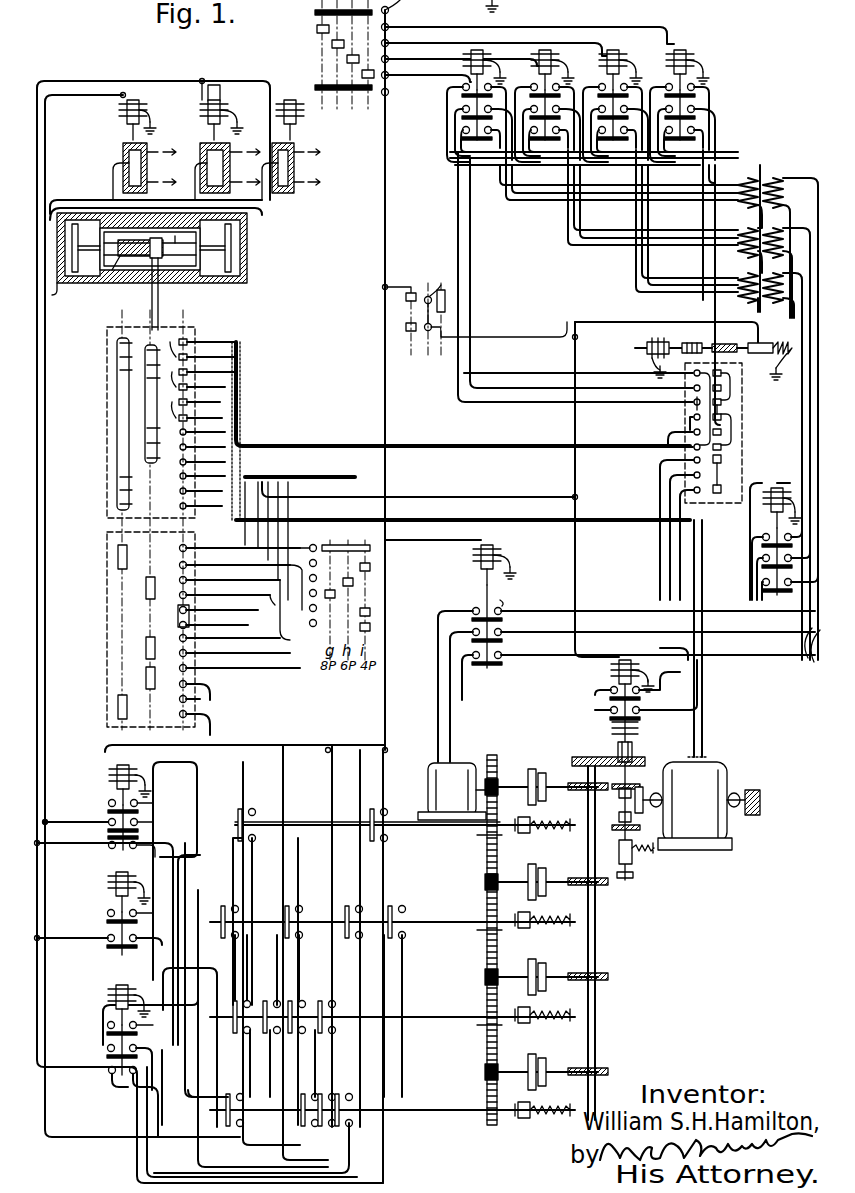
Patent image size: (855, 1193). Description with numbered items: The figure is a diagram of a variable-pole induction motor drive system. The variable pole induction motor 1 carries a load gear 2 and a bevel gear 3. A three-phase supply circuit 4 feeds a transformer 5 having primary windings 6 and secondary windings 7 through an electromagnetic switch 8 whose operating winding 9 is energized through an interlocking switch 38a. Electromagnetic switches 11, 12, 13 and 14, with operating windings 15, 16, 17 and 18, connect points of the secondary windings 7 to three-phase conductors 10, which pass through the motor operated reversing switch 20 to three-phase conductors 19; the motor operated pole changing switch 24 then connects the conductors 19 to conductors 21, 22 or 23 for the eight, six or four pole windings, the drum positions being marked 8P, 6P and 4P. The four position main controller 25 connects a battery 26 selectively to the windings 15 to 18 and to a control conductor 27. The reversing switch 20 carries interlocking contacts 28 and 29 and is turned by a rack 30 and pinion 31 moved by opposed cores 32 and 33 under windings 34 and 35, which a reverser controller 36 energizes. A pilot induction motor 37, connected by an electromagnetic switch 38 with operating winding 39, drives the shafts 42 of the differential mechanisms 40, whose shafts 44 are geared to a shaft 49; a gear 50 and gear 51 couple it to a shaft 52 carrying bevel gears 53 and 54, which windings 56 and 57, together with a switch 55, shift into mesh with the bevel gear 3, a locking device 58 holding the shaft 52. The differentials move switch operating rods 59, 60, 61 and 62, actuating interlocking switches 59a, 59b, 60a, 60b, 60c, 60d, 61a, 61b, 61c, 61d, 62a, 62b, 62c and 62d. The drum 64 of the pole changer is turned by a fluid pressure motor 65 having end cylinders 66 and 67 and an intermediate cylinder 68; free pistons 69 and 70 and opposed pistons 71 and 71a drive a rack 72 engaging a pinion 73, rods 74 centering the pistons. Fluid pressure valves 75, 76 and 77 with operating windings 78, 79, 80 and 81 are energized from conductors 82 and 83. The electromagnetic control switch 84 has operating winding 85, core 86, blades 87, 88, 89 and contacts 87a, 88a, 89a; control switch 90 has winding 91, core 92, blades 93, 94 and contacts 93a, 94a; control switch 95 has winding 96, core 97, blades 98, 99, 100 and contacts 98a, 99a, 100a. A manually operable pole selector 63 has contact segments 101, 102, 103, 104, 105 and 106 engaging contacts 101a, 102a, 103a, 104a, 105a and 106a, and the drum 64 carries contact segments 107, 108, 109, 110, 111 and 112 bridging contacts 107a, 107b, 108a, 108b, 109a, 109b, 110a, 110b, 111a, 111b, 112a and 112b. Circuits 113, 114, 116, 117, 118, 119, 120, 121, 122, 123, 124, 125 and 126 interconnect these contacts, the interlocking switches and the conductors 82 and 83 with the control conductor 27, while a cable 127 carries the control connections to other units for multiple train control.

The variable pole induction motor 1 is at (701, 685).
The gear 2 is at (751, 790).
The bevel gear 3 is at (649, 790).
The three-phase supply circuit 4 is at (795, 650).
The transformer 5 is at (766, 229).
The primary windings 6 is at (779, 178).
The secondary windings 7 is at (747, 178).
The electromagnetic switch 8 is at (783, 554).
The operating winding 9 is at (781, 488).
The three-phase conductors 10 is at (456, 191).
The electromagnetic switch 11 is at (477, 114).
The electromagnetic switch 12 is at (547, 114).
The electromagnetic switch 13 is at (615, 114).
The electromagnetic switch 14 is at (682, 114).
The operating winding 15 is at (478, 67).
The operating winding 16 is at (546, 67).
The operating winding 17 is at (614, 67).
The operating winding 18 is at (681, 67).
The three-phase conductors 19 is at (461, 431).
The motor operated reversing switch 20 is at (717, 433).
The conductors 21 is at (232, 385).
The conductors 22 is at (228, 440).
The conductors 23 is at (222, 490).
The motor operated pole changing switch 24 is at (131, 512).
The main controller 25 is at (332, 62).
The battery 26 is at (432, 5).
The control conductor 27 is at (397, 380).
The interlocking contacts 28 is at (704, 503).
The interlocking contacts 29 is at (724, 458).
The rack 30 is at (695, 336).
The pinion 31 is at (726, 341).
The core 32 is at (645, 348).
The core 33 is at (759, 362).
The winding 34 is at (648, 368).
The winding 35 is at (776, 340).
The reverser controller 36 is at (476, 314).
The induction motor 37 is at (452, 791).
The electromagnetic switch 38 is at (626, 670).
The interlocking switch 38a is at (516, 597).
The operating winding 39 is at (500, 546).
The differential mechanism 40 is at (546, 939).
The shaft 42 is at (500, 944).
The shaft 44 is at (559, 904).
The shaft 49 is at (596, 918).
The gear 50 is at (608, 928).
The gear 51 is at (645, 758).
The shaft 52 is at (610, 732).
The bevel gear 53 is at (620, 796).
The bevel gear 54 is at (620, 821).
The switch 55 is at (608, 698).
The winding 56 is at (640, 727).
The winding 57 is at (612, 665).
The locking device 58 is at (632, 856).
The switch operating rod 59 is at (438, 820).
The interlocking switch 59a is at (392, 819).
The interlocking switch 59b is at (259, 820).
The switch operating rod 60 is at (445, 917).
The interlocking switch 60a is at (408, 918).
The interlocking switch 60b is at (349, 909).
The interlocking switch 60c is at (247, 913).
The interlocking switch 60d is at (307, 913).
The switch operating rod 61 is at (445, 1012).
The interlocking switch 61a is at (268, 1005).
The interlocking switch 61b is at (281, 1027).
The interlocking switch 61c is at (226, 1013).
The interlocking switch 61d is at (338, 1010).
The switch operating rod 62 is at (462, 1112).
The interlocking switch 62a is at (312, 1090).
The interlocking switch 62b is at (348, 1102).
The interlocking switch 62c is at (320, 1102).
The interlocking switch 62d is at (230, 1099).
The manually operable pole selector 63 is at (350, 600).
The drum 64 is at (105, 435).
The fluid pressure motor 65 is at (150, 235).
The end cylinder 66 is at (167, 248).
The end cylinder 67 is at (62, 293).
The intermediate cylinder 68 is at (140, 264).
The free piston 69 is at (219, 245).
The free piston 70 is at (86, 245).
The piston 71 is at (150, 229).
The piston 71a is at (182, 224).
The rack 72 is at (121, 273).
The pinion 73 is at (167, 262).
The rods 74 is at (151, 257).
The fluid pressure valve 75 is at (134, 160).
The fluid pressure valve 76 is at (220, 160).
The fluid pressure valve 77 is at (285, 160).
The operating winding 78 is at (144, 120).
The operating winding 79 is at (225, 110).
The operating winding 80 is at (229, 89).
The operating winding 81 is at (292, 111).
The conductor 82 is at (201, 635).
The conductor 83 is at (210, 620).
The electromagnetic control switch 84 is at (117, 1007).
The operating winding 85 is at (122, 993).
The core 86 is at (115, 992).
The switch blade 87 is at (150, 1090).
The contacts 87a is at (125, 1080).
The switch blade 88 is at (110, 1052).
The contacts 88a is at (108, 1072).
The switch blade 89 is at (112, 1036).
The contacts 89a is at (108, 1027).
The electromagnetic control switch 90 is at (107, 887).
The operating winding 91 is at (115, 887).
The core 92 is at (117, 899).
The switch blade 93 is at (115, 950).
The contacts 93a is at (108, 942).
The switch blade 94 is at (137, 916).
The contacts 94a is at (106, 918).
The electromagnetic control switch 95 is at (107, 779).
The operating winding 96 is at (115, 777).
The core 97 is at (117, 790).
The switch blade 98 is at (108, 838).
The contacts 98a is at (110, 850).
The switch blade 99 is at (138, 836).
The contacts 99a is at (138, 825).
The switch blade 100 is at (108, 812).
The contacts 100a is at (138, 806).
The contact segment 101 is at (372, 548).
The contact 101a is at (300, 545).
The contact segment 102 is at (402, 562).
The contact 102a is at (300, 560).
The contact segment 103 is at (356, 594).
The contact 103a is at (301, 575).
The contact segment 104 is at (372, 609).
The contact 104a is at (301, 590).
The contact segment 105 is at (372, 624).
The contact 105a is at (302, 605).
The contact segment 106 is at (372, 632).
The contact 106a is at (302, 620).
The contact segment 107 is at (116, 553).
The contact 107a is at (240, 543).
The contact 107b is at (235, 559).
The contact segment 108 is at (144, 590).
The contact 108a is at (230, 574).
The contact 108b is at (225, 589).
The contact segment 109 is at (176, 620).
The contact 109a is at (219, 604).
The contact 109b is at (214, 619).
The contact segment 110 is at (144, 650).
The contact 110a is at (230, 633).
The contact 110b is at (235, 648).
The contact segment 111 is at (144, 678).
The contact 111a is at (240, 663).
The contact 111b is at (206, 684).
The contact segment 112 is at (116, 708).
The contact 112a is at (205, 694).
The contact 112b is at (206, 717).
The circuit 113 is at (378, 1180).
The circuit 114 is at (352, 1168).
The circuit 116 is at (278, 975).
The circuit 117 is at (304, 938).
The circuit 118 is at (100, 978).
The circuit 119 is at (152, 945).
The circuit 120 is at (232, 968).
The circuit 121 is at (185, 995).
The circuit 122 is at (330, 860).
The circuit 123 is at (76, 814).
The circuit 124 is at (300, 1142).
The circuit 125 is at (230, 744).
The circuit 126 is at (175, 1062).
The cable 127 is at (410, 527).
The contact bar 4P is at (128, 402).
The contact bar 6P is at (160, 378).
The contact bar 8P is at (186, 401).